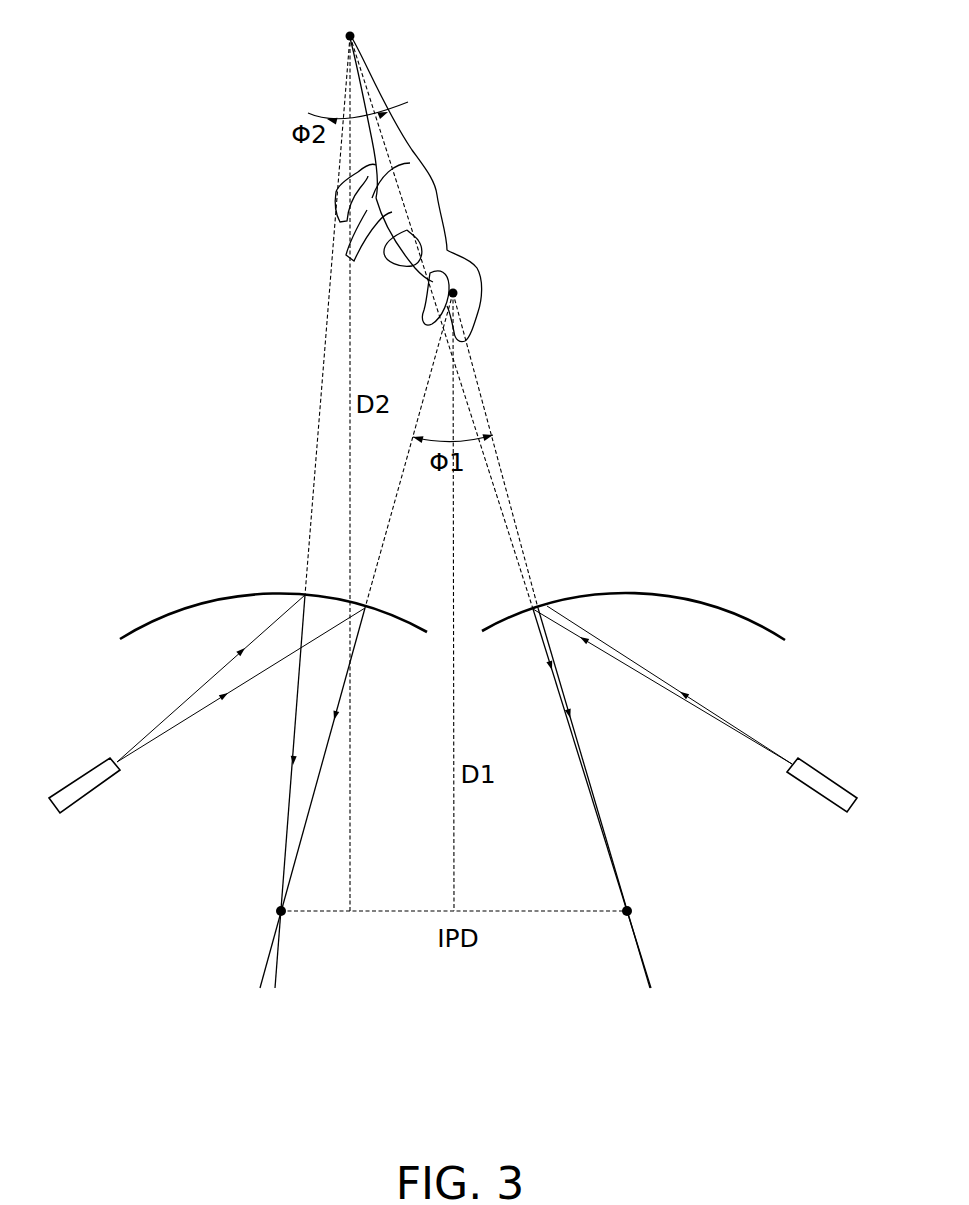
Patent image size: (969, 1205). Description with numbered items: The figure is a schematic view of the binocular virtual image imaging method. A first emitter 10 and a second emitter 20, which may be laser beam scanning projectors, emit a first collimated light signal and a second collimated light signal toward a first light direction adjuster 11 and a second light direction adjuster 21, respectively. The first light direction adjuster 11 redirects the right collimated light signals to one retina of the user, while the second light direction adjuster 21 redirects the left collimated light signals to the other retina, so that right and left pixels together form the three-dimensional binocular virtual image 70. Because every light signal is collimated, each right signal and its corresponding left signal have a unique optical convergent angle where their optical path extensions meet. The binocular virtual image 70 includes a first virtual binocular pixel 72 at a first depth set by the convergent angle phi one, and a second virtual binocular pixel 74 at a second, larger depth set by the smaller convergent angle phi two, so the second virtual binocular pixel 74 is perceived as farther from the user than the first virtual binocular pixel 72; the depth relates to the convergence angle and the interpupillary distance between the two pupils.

The first emitter 10 is at (828, 777).
The first light direction adjuster 11 is at (745, 613).
The second emitter 20 is at (78, 778).
The second light direction adjuster 21 is at (162, 612).
The 3D binocular virtual image 70 is at (438, 183).
The first virtual binocular pixel 72 is at (460, 293).
The second virtual binocular pixel 74 is at (357, 36).